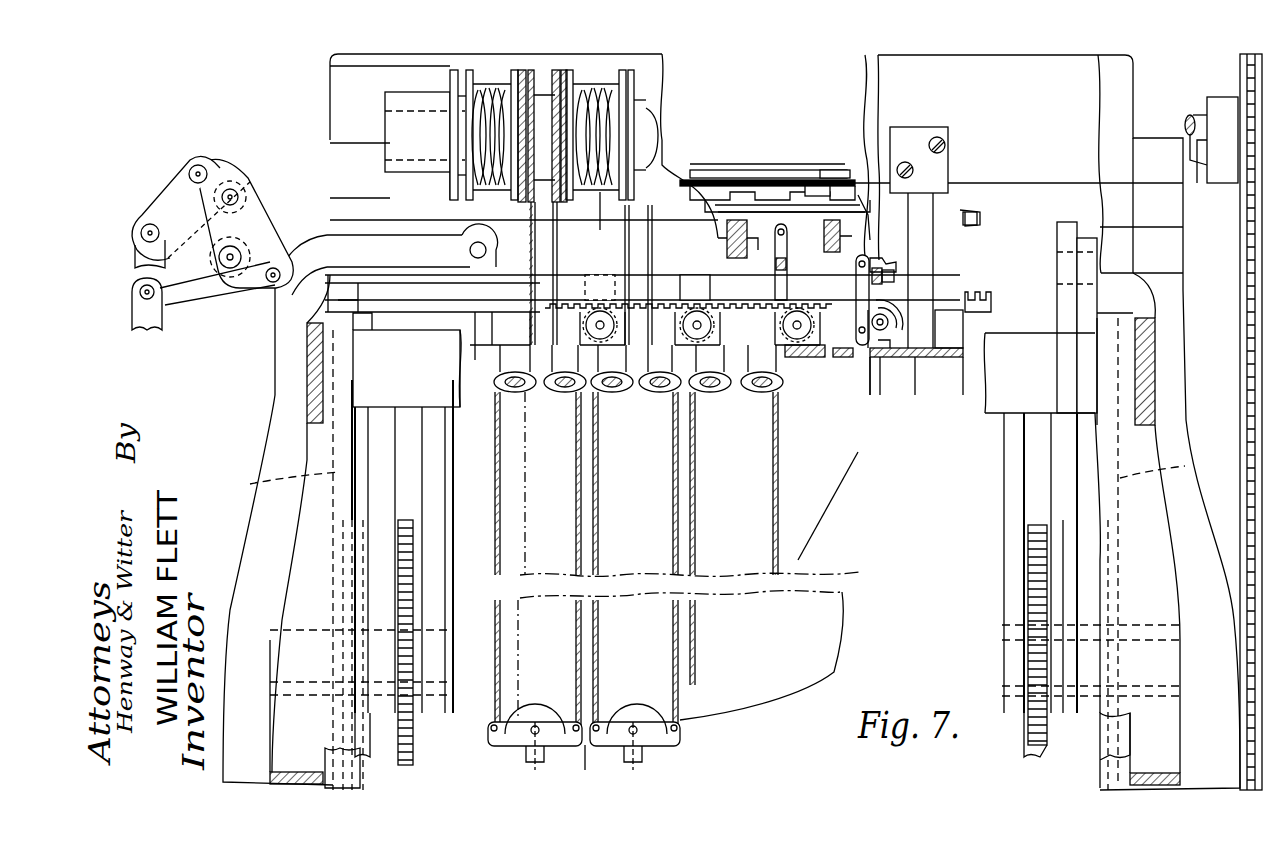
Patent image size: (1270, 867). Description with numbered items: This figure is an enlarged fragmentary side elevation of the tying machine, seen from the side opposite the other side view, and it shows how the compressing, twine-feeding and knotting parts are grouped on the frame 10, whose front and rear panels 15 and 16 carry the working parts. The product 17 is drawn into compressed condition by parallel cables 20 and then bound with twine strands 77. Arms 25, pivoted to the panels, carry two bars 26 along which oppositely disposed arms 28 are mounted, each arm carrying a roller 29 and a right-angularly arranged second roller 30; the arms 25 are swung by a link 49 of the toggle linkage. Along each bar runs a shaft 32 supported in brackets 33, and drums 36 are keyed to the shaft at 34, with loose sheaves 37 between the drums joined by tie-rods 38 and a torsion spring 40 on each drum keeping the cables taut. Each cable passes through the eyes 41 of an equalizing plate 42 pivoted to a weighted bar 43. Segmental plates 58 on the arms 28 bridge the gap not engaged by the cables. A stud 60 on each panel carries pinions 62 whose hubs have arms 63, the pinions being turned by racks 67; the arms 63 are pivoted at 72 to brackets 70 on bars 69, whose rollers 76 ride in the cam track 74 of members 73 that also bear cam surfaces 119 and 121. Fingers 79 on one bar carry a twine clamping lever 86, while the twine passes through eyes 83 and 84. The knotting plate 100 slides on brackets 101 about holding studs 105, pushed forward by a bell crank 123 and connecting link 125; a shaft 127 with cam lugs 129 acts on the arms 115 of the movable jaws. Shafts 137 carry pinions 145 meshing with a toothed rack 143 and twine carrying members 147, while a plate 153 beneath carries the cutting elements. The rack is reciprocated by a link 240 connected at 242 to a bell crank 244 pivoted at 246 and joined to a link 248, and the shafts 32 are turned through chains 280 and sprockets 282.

The frame 10 is at (335, 788).
The front panel 15 is at (296, 712).
The rear panel 16 is at (1155, 749).
The parcel of meat or like product 17 is at (762, 718).
The cables 20 is at (672, 530).
The arms 25 is at (268, 462).
The bars 26 is at (1052, 66).
The arms 28 is at (922, 200).
The roller 29 is at (663, 395).
The second roller 30 is at (768, 393).
The shaft 32 is at (654, 140).
The brackets 33 is at (404, 98).
The keying point 34 is at (490, 90).
The drums 36 is at (480, 82).
The sheaves 37 is at (536, 68).
The tie-rods 38 is at (518, 68).
The torsion spring 40 is at (593, 211).
The eyes 41 is at (581, 763).
The equalizing plate 42 is at (502, 748).
The bar 43 is at (587, 758).
The link 49 is at (300, 375).
The segmental plates 58 is at (940, 360).
The stud 60 is at (438, 672).
The pinions 62 is at (380, 655).
The arms 63 is at (440, 514).
The racks 67 is at (390, 757).
The bars 69 is at (455, 395).
The brackets 70 is at (372, 352).
The pivot connection 72 is at (1067, 252).
The members 73 is at (300, 520).
The cam track 74 is at (720, 472).
The rollers 76 is at (308, 334).
The twine strands 77 is at (862, 454).
The fingers 79 is at (894, 288).
The eye 83 is at (873, 222).
The eye 84 is at (860, 346).
The twine clamping lever 86 is at (898, 265).
The plate 100 is at (870, 206).
The brackets 101 is at (727, 250).
The holding studs 105 is at (766, 186).
The arm 115 is at (812, 172).
The cam surface 119 is at (355, 510).
The cam surface 121 is at (1030, 516).
The bell crank 123 is at (186, 295).
The connecting link 125 is at (152, 332).
The shaft 127 is at (718, 168).
The cam lugs 129 is at (832, 182).
The shafts 137 is at (800, 336).
The toothed rack 143 is at (636, 296).
The pinions 145 is at (590, 318).
The twine carrying member 147 is at (908, 320).
The plate 153 is at (966, 226).
The link 240 is at (360, 246).
The connection 242 is at (480, 246).
The bell crank 244 is at (170, 212).
The pivot 246 is at (233, 190).
The link 248 is at (136, 258).
The chains 280 is at (1246, 432).
The sprockets 282 is at (1232, 97).